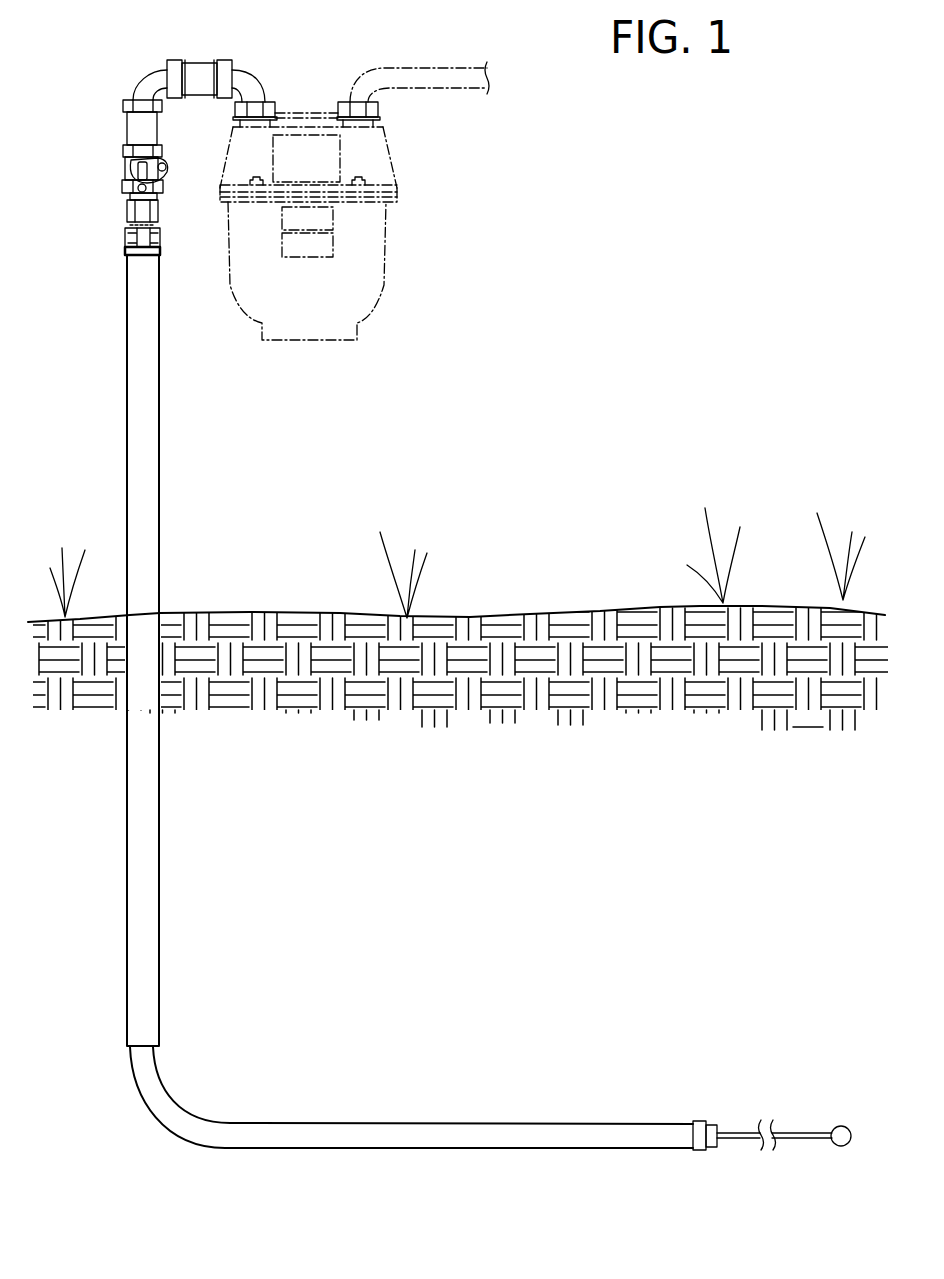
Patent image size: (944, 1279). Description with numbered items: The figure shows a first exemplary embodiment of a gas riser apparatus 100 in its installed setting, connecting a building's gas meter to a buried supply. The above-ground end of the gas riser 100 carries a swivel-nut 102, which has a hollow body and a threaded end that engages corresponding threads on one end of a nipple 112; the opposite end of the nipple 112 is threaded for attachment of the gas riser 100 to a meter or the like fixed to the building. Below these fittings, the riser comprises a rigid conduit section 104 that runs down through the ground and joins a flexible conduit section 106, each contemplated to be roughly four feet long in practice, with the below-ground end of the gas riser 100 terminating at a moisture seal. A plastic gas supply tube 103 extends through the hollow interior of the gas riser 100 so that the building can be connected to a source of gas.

The gas riser apparatus 100 is at (190, 476).
The swivel-nut 102 is at (125, 238).
The plastic gas supply tube 103 is at (737, 1132).
The rigid conduit section 104 is at (145, 452).
The flexible conduit section 106 is at (375, 1132).
The nipple 112 is at (127, 212).